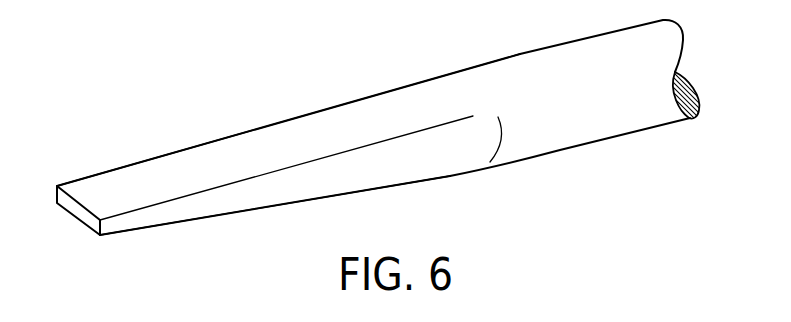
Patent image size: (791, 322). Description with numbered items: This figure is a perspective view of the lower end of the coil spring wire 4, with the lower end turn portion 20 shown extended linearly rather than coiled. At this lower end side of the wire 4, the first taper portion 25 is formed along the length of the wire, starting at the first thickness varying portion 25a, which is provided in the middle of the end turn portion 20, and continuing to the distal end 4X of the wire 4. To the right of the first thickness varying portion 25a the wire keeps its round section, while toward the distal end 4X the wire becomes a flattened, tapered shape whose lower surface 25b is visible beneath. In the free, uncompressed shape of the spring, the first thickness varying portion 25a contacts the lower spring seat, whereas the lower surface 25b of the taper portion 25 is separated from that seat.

The wire 4 is at (393, 145).
The distal end 4X is at (77, 208).
The lower end turn portion 20 is at (526, 163).
The first taper portion 25 is at (275, 149).
The first thickness varying portion 25a is at (478, 93).
The lower surface of the first taper portion 25b is at (207, 221).